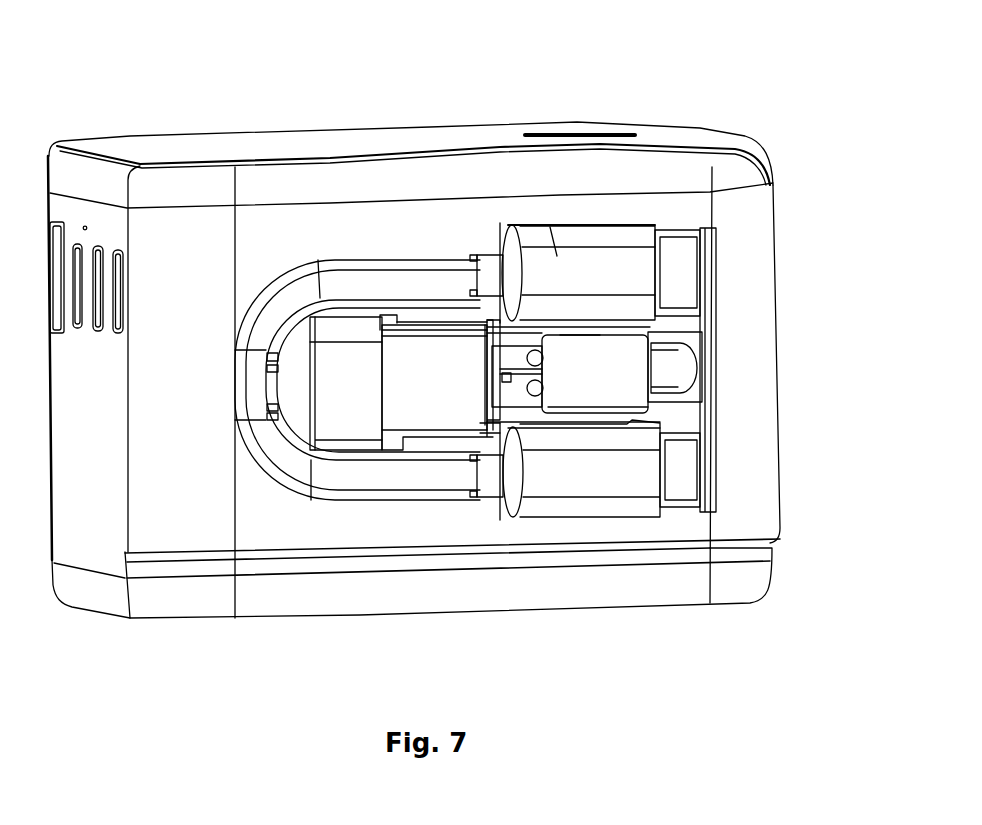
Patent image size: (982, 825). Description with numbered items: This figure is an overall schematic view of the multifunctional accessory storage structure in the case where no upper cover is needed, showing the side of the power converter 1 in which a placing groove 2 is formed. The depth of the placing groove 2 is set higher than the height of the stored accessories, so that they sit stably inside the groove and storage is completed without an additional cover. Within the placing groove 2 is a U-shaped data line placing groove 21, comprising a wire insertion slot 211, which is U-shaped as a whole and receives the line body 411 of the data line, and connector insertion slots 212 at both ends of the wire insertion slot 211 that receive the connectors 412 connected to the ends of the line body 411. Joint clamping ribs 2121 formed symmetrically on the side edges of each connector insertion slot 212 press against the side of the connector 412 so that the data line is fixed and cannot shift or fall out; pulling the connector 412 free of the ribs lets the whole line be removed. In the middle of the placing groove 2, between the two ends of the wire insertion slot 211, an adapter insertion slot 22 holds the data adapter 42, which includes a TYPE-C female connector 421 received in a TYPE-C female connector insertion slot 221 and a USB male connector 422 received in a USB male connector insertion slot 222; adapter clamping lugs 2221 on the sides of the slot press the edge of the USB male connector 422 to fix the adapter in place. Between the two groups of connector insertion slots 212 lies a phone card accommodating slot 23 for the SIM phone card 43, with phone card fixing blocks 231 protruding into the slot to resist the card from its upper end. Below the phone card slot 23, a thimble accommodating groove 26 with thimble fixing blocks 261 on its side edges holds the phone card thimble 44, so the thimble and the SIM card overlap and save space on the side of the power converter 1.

The power converter 1 is at (347, 152).
The placing groove 2 is at (504, 223).
The data line placing groove 21 is at (655, 228).
The wire insertion slot 211 is at (298, 262).
The connector insertion slot 212 is at (657, 222).
The joint clamping rib 2121 is at (625, 226).
The adapter insertion slot 22 is at (378, 325).
The TYPE-C female connector insertion slot 221 is at (385, 323).
The USB male connector insertion slot 222 is at (486, 340).
The adapter clamping lug 2221 is at (410, 323).
The phone card accommodating slot 23 is at (650, 333).
The phone card fixing block 231 is at (612, 410).
The thimble accommodating groove 26 is at (510, 355).
The thimble fixing block 261 is at (665, 425).
The line body 411 is at (277, 300).
The connector 412 is at (551, 227).
The data adapter 42 is at (347, 408).
The TYPE-C female connector 421 is at (337, 400).
The USB male connector 422 is at (422, 407).
The SIM phone card 43 is at (623, 378).
The phone card thimble 44 is at (650, 393).